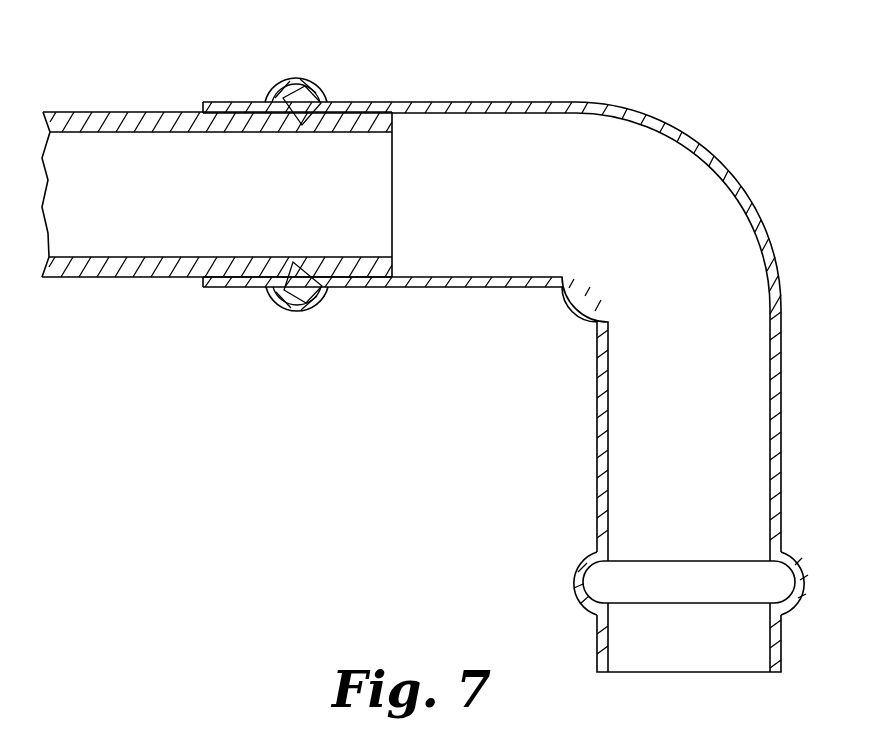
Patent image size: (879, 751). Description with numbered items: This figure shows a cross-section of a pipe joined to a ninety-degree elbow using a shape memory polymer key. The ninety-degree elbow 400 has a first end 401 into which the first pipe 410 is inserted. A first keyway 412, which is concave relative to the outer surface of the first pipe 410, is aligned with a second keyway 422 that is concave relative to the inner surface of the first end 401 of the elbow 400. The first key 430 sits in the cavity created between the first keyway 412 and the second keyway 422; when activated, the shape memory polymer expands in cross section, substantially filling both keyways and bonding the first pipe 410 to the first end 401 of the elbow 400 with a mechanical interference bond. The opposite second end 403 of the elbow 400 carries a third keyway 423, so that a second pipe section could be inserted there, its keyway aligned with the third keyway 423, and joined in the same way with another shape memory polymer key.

The 90° elbow 400 is at (598, 95).
The first end 401 is at (215, 104).
The second end 403 is at (600, 647).
The first pipe 410 is at (93, 104).
The first keyway 412 is at (292, 130).
The second keyway 422 is at (298, 80).
The third keyway 423 is at (577, 582).
The first key 430 is at (305, 102).